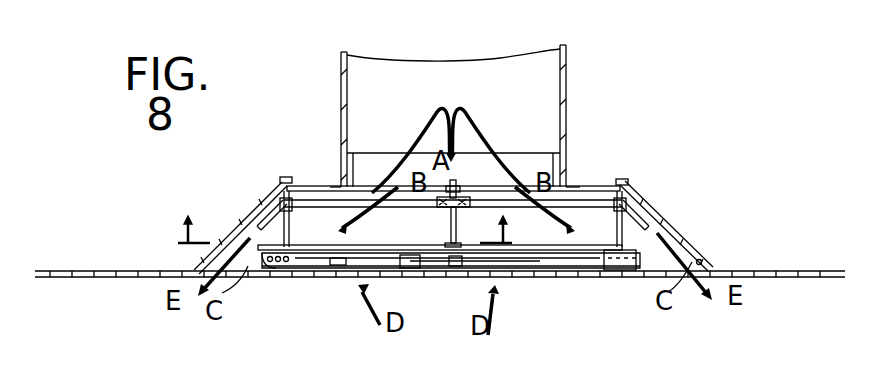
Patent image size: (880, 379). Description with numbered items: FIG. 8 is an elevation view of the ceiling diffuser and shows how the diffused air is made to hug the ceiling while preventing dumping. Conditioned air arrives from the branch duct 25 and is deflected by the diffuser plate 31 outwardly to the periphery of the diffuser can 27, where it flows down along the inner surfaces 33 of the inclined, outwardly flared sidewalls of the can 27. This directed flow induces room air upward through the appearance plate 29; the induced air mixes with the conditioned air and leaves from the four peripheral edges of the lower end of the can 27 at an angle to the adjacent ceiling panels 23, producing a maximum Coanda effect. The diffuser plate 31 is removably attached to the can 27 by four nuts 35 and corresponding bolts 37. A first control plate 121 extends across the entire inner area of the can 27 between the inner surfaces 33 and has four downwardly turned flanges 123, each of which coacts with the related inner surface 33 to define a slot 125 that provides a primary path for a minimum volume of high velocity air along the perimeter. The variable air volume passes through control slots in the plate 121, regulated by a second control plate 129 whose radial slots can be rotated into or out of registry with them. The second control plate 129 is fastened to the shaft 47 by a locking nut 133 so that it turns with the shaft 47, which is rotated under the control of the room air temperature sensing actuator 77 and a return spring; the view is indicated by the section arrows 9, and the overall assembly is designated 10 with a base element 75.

The inflatable structure assembly 10 is at (650, 167).
The ceiling panels 23 is at (60, 271).
The branch duct 25 is at (557, 75).
The diffuser can 27 is at (316, 186).
The appearance plate 29 is at (565, 273).
The diffuser plate 31 is at (517, 246).
The inner surfaces 33 is at (703, 267).
The nuts 35 is at (256, 272).
The bolts 37 is at (289, 224).
The shaft 47 is at (438, 270).
The base slab 75 is at (518, 258).
The room air temperature sensing actuator 77 is at (385, 266).
The first control plate 121 is at (410, 210).
The downwardly turned flanges 123 is at (668, 226).
The slots 125 is at (645, 216).
The second control plate 129 is at (628, 190).
The locking nut 133 is at (458, 196).
The section indicator 9 is at (345, 229).